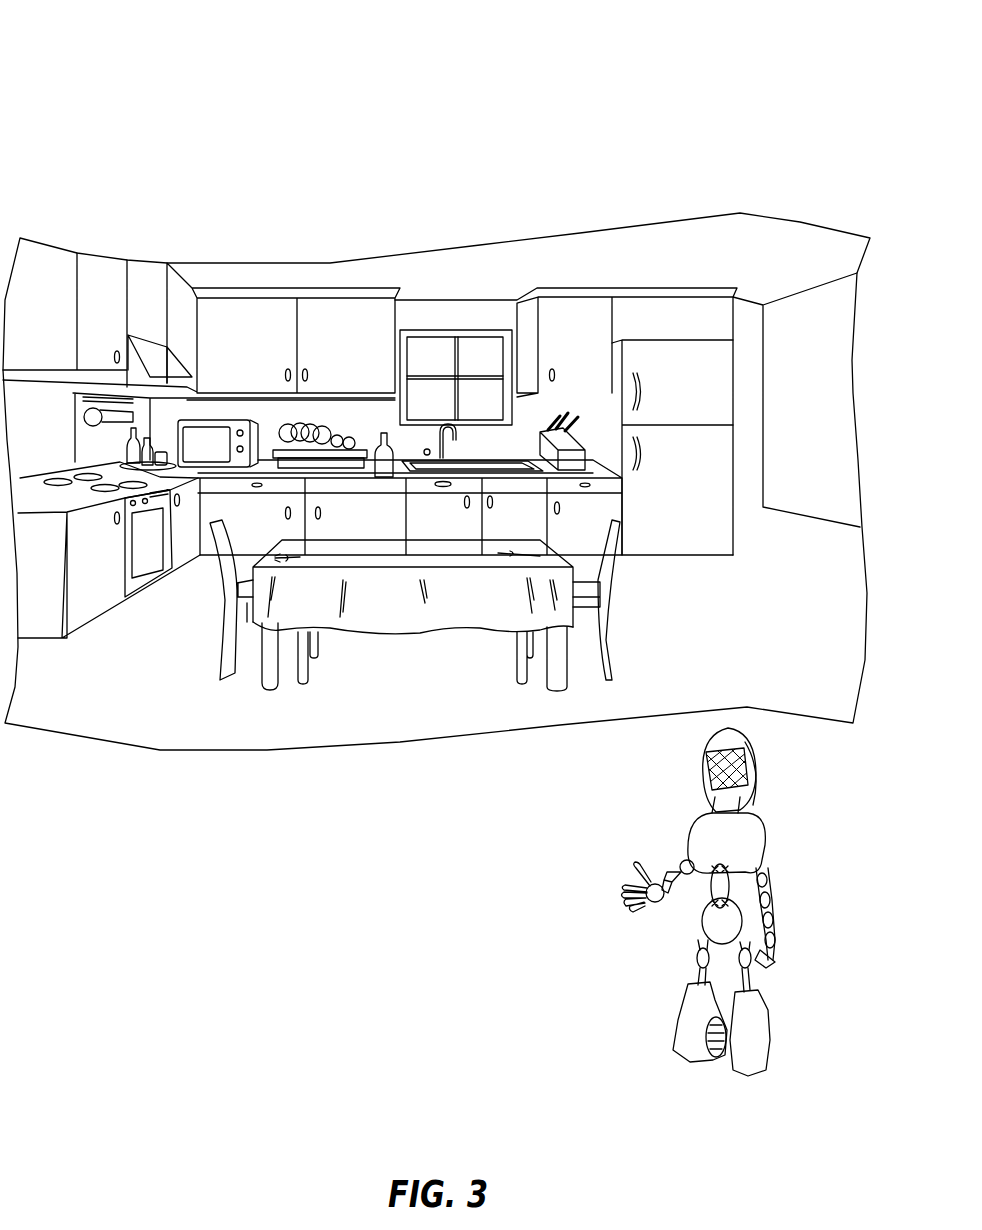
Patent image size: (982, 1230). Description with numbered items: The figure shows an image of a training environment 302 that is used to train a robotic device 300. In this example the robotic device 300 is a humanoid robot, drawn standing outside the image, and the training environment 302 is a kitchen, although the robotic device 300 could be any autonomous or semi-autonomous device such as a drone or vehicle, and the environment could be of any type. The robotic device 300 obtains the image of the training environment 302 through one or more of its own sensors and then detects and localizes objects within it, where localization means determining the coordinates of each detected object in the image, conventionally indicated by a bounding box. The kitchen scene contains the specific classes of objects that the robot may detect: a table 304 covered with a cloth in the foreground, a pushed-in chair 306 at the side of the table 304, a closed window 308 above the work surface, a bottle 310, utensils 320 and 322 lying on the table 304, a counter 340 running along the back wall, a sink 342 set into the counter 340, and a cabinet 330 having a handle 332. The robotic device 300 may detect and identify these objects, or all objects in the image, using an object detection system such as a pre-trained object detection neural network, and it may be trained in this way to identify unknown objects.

The robotic device 300 is at (738, 854).
The training environment 302 is at (582, 232).
The table 304 is at (403, 610).
The pushed-in chair 306 is at (610, 617).
The closed window 308 is at (473, 345).
The bottle 310 is at (355, 524).
The utensil 320 is at (282, 557).
The utensil 322 is at (498, 553).
The cabinet 330 is at (433, 493).
The handle 332 is at (450, 495).
The counter 340 is at (542, 467).
The sink 342 is at (473, 470).